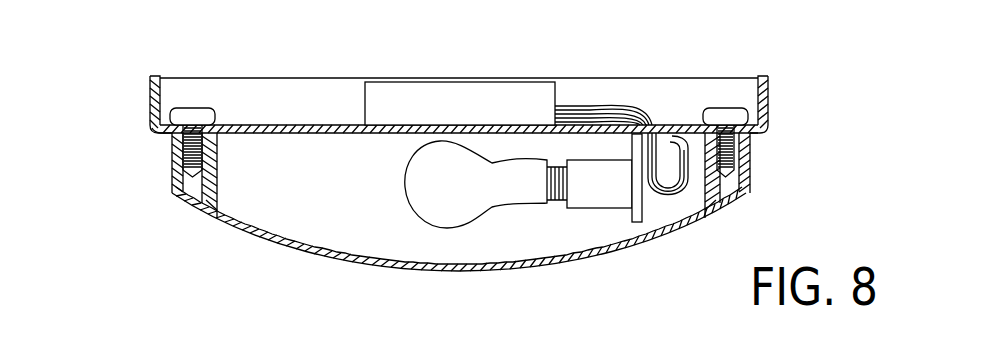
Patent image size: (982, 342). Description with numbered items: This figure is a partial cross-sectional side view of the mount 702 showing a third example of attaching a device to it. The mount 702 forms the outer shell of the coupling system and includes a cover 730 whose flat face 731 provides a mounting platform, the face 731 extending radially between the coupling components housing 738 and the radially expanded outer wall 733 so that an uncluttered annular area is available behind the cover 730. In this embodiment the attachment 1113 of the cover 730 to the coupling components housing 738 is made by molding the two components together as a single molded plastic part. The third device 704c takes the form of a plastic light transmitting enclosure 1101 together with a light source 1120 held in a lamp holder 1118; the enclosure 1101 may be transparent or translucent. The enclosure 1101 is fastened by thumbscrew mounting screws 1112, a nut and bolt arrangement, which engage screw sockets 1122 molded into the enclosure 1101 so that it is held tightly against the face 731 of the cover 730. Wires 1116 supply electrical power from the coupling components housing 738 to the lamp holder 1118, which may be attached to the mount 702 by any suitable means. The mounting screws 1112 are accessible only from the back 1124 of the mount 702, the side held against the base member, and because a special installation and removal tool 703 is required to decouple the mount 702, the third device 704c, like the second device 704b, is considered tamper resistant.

The mount 702 is at (336, 66).
The installation and removal tool 703 is at (374, 341).
The second device 704b is at (727, 9).
The third device 704c is at (628, 258).
The cover 730 is at (150, 77).
The face 731 is at (305, 135).
The outer wall 733 is at (154, 131).
The coupling components housing 738 is at (468, 97).
The light transmitting enclosure 1101 is at (337, 266).
The thumbscrew mounting screws 1112 is at (190, 108).
The attachment 1113 is at (392, 126).
The wires 1116 is at (664, 200).
The lamp holder 1118 is at (582, 208).
The light source 1120 is at (402, 178).
The screw sockets 1122 is at (175, 196).
The back 1124 is at (598, 60).